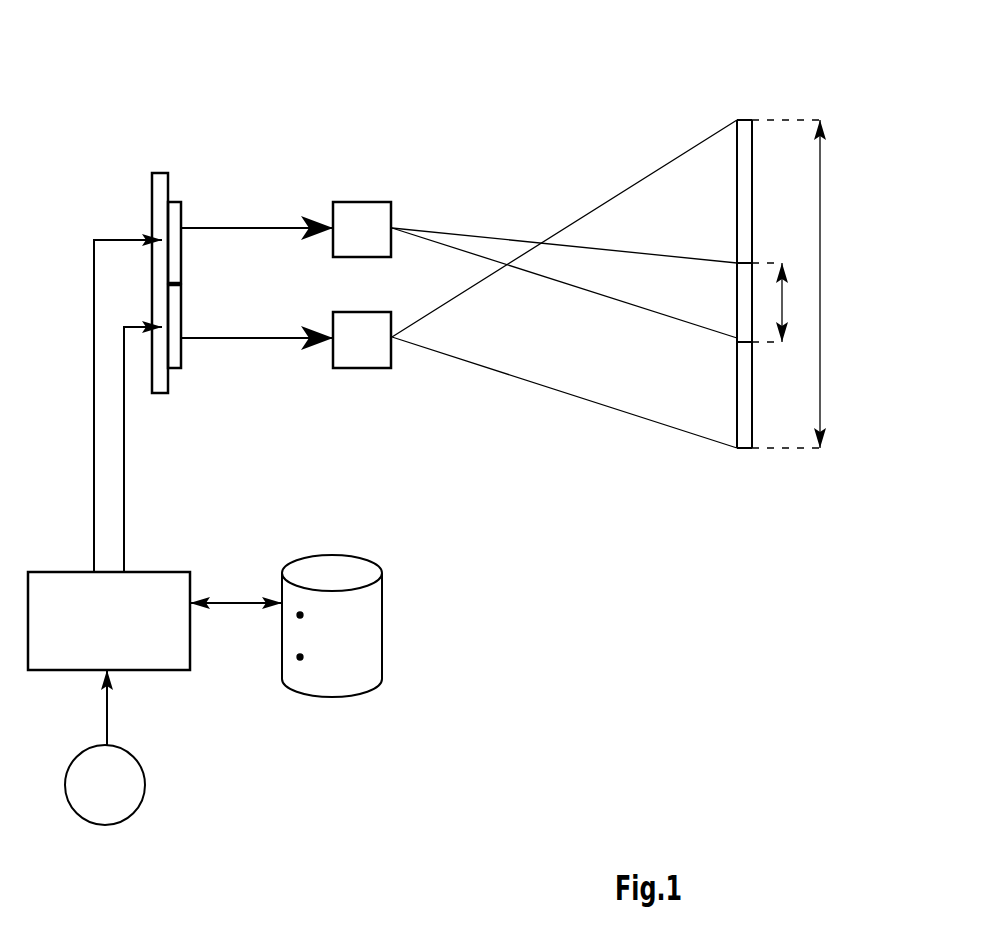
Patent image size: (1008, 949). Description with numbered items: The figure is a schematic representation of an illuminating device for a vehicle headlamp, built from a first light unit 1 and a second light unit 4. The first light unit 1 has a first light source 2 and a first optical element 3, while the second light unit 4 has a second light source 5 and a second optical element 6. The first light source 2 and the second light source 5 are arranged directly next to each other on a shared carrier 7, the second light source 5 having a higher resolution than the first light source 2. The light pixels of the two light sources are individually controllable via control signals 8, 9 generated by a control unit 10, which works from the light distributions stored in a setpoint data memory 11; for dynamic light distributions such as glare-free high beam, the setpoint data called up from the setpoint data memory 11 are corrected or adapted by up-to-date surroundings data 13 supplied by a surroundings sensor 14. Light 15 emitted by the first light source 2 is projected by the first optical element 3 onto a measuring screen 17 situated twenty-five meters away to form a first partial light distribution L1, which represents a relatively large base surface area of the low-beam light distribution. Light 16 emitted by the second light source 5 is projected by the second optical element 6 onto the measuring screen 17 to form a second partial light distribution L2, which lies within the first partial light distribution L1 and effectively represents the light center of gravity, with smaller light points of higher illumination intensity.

The first light unit 1 is at (417, 423).
The first light source 2 is at (183, 358).
The first optical element 3 is at (370, 353).
The second light unit 4 is at (328, 125).
The second light source 5 is at (183, 218).
The second optical element 6 is at (370, 244).
The shared carrier 7 is at (152, 204).
The control signal 8 is at (127, 527).
The control signal 9 is at (92, 520).
The control unit 10 is at (124, 635).
The setpoint data memory 11 is at (383, 602).
The surroundings data 13 is at (108, 723).
The surroundings sensor 14 is at (121, 798).
The light 15 is at (265, 338).
The light 16 is at (272, 227).
The measuring screen 17 is at (752, 417).
The first partial light distribution L1 is at (823, 225).
The second partial light distribution L2 is at (782, 297).